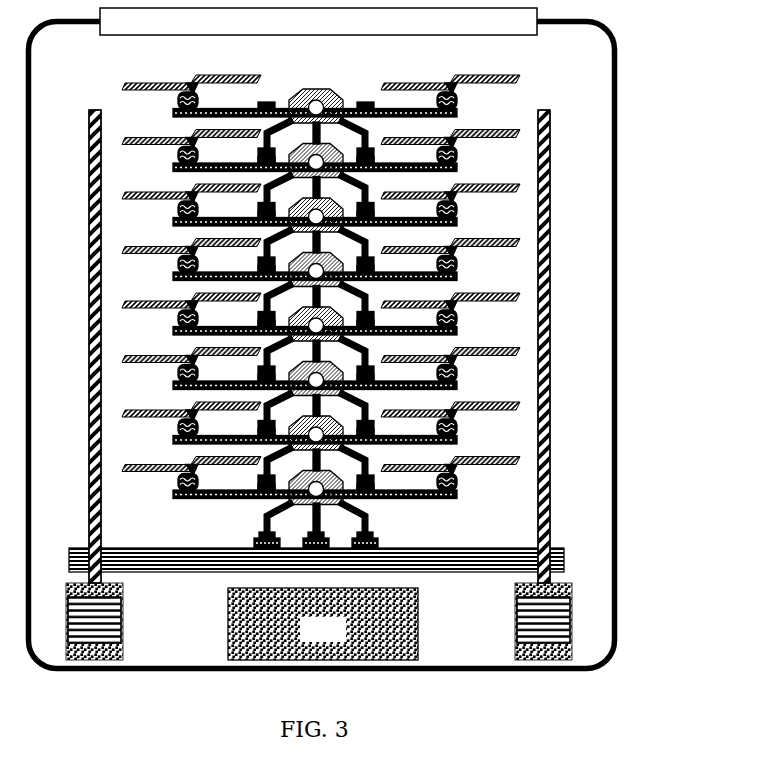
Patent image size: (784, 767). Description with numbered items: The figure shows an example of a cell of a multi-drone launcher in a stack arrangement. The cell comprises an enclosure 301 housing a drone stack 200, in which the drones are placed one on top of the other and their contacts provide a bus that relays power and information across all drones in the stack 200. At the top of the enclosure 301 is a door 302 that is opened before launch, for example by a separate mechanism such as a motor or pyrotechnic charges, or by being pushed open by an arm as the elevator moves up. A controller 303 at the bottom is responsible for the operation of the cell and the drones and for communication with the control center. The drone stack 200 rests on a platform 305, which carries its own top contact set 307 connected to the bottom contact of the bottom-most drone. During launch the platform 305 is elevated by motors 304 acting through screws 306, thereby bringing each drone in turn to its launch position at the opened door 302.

The drone stack 200 is at (321, 293).
The enclosure 301 is at (626, 79).
The door 302 is at (318, 22).
The controller 303 is at (323, 624).
The motors 304 is at (584, 627).
The platform 305 is at (576, 560).
The screws 306 is at (562, 508).
The top contact set 307 is at (388, 537).